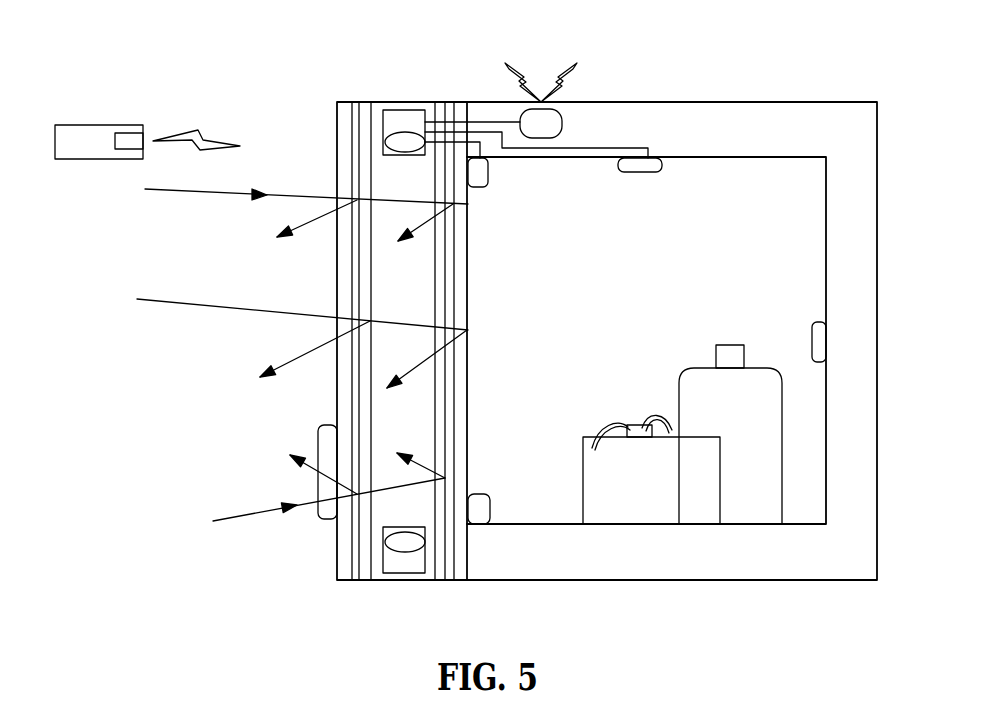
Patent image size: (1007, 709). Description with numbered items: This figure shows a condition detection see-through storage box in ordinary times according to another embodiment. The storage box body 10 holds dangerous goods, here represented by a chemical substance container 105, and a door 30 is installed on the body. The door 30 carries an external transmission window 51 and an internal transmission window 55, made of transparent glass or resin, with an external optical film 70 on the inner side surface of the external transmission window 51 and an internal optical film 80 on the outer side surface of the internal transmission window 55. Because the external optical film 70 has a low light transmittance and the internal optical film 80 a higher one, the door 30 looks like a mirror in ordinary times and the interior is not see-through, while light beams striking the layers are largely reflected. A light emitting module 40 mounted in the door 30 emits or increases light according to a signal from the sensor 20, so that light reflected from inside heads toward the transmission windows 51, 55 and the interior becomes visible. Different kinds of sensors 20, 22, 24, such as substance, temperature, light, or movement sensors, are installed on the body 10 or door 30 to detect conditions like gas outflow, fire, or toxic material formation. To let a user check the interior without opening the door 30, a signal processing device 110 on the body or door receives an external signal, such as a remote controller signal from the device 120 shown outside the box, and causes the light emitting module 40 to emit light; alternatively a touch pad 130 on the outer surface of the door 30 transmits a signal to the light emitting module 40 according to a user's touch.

The storage box body 10 is at (880, 183).
The sensor 20 is at (655, 163).
The sensor 22 is at (818, 341).
The sensor 24 is at (487, 518).
The door 30 is at (306, 118).
The light emitting module 40 is at (402, 122).
The external transmission window 51 is at (337, 265).
The internal transmission window 55 is at (468, 348).
The external optical film 70 is at (352, 395).
The internal optical film 80 is at (445, 412).
The chemical substance container 105 is at (633, 512).
The signal processing device 110 is at (550, 122).
The remote control device 120 is at (88, 125).
The touch pad 130 is at (327, 435).